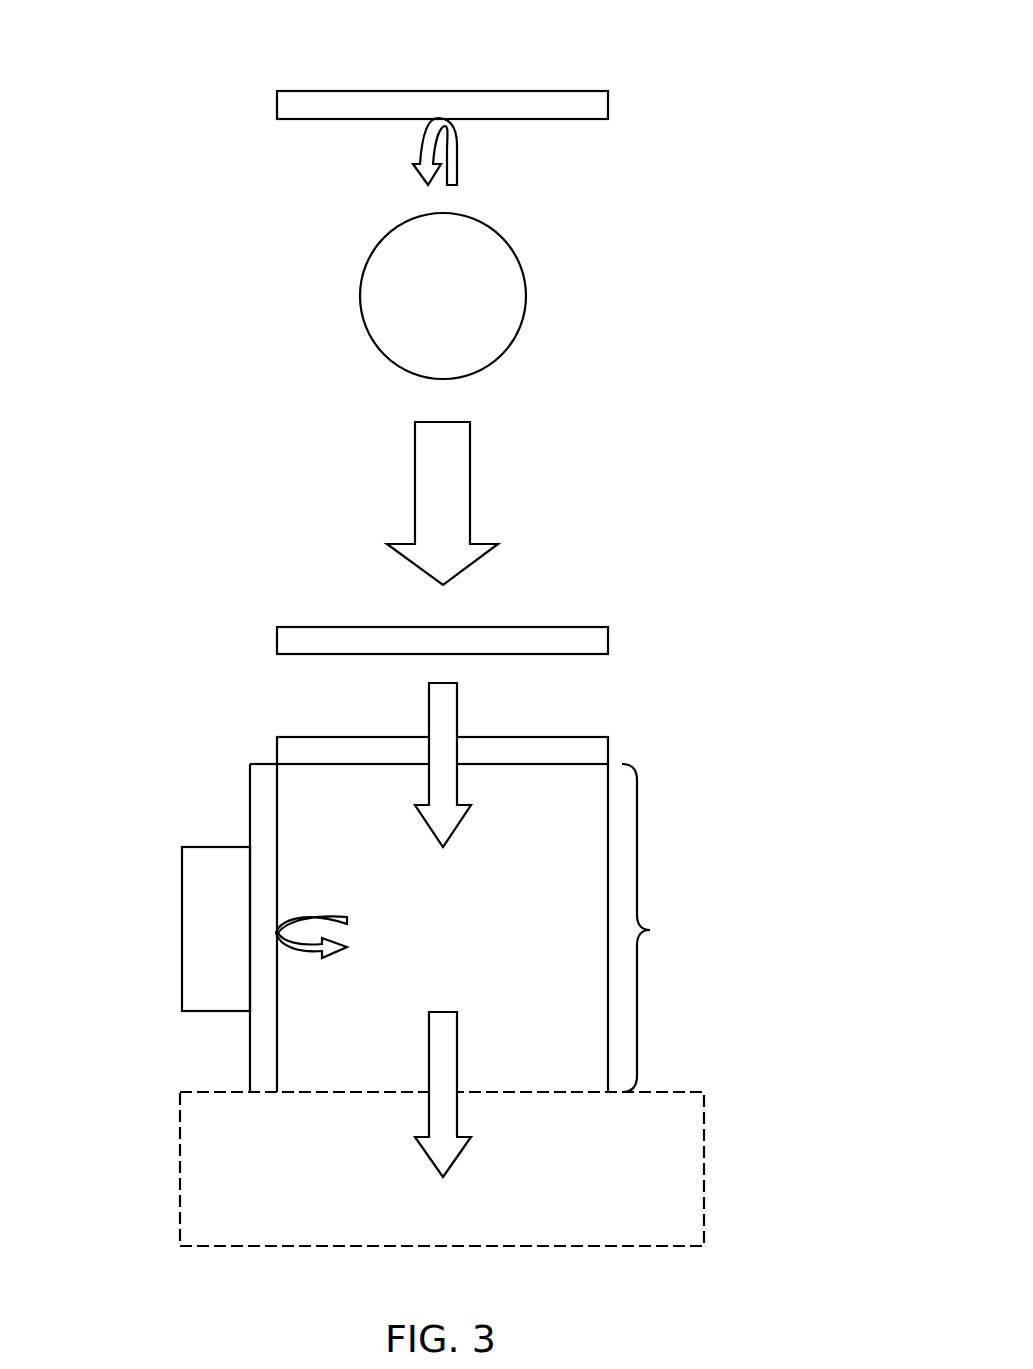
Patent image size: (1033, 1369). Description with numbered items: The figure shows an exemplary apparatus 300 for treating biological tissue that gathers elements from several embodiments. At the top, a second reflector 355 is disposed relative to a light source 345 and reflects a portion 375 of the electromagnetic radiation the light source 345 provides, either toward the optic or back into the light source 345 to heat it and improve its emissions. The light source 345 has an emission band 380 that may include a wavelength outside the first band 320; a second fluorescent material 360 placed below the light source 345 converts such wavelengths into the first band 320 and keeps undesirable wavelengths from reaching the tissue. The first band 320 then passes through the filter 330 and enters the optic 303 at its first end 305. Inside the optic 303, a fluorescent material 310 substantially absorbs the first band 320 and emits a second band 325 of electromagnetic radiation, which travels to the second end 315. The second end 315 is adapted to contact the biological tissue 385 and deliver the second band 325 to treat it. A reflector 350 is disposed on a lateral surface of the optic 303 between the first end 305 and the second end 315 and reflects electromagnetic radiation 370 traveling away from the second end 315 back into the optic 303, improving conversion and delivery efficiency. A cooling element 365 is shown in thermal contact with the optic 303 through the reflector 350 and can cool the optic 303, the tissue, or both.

The apparatus 300 is at (650, 115).
The second reflector 355 is at (277, 103).
The portion of electromagnetic radiation 375 is at (417, 145).
The light source 345 is at (526, 294).
The emission band 380 is at (455, 500).
The second fluorescent material 360 is at (608, 640).
The filter 330 is at (608, 750).
The first band of electromagnetic radiation 320 is at (443, 723).
The optic 303 is at (488, 928).
The first end 305 is at (582, 767).
The fluorescent material 310 is at (580, 1028).
The second band of electromagnetic radiation 325 is at (430, 1082).
The reflector 350 is at (250, 1037).
The cooling element 365 is at (182, 930).
The electromagnetic radiation 370 is at (305, 915).
The second end 315 is at (302, 1095).
The biological tissue 385 is at (690, 1133).